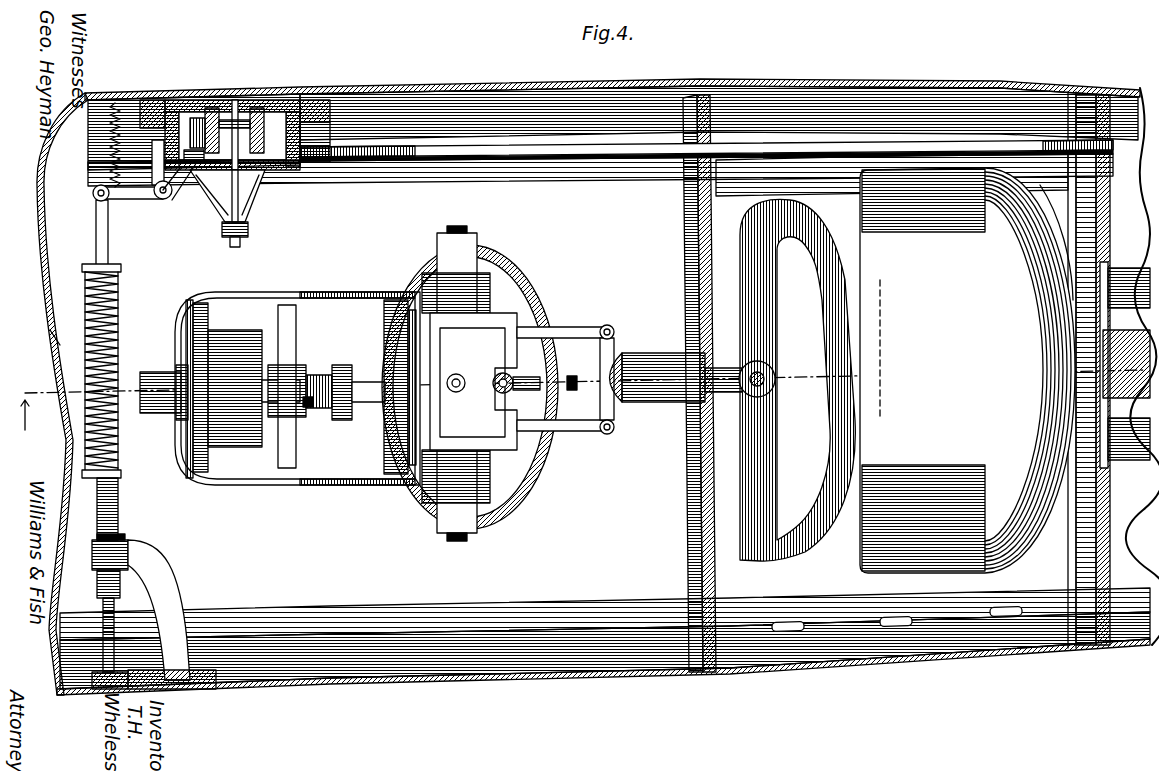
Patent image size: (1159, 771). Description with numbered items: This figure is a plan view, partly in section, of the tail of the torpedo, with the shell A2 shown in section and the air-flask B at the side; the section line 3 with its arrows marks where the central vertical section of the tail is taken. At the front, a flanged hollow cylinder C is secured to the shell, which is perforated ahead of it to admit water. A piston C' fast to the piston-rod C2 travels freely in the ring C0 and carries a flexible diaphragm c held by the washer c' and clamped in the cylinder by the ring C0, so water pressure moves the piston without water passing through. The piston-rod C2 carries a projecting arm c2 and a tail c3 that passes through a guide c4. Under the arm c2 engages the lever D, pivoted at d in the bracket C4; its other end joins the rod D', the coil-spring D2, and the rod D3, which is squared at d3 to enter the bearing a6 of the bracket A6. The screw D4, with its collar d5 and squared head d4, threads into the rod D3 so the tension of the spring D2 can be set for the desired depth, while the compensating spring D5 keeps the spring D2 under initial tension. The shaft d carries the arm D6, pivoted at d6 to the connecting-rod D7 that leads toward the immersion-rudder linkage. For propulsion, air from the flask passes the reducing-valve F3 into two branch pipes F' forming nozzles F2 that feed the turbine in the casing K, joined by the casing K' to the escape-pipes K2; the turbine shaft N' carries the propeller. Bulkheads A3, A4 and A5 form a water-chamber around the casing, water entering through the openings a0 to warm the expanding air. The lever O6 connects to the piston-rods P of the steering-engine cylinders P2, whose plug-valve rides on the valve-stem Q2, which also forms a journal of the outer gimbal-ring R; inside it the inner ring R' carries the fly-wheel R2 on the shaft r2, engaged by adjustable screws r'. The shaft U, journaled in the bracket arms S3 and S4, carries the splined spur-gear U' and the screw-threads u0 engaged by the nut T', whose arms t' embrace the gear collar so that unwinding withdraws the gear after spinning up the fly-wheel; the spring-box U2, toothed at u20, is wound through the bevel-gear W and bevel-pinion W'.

The hull shell A2 is at (505, 90).
The bulkhead A3 is at (683, 555).
The bulkhead A4 is at (1055, 228).
The bulkhead A5 is at (820, 160).
The bracket A6 is at (180, 590).
The air-flask B is at (43, 339).
The section line 3 is at (545, 396).
The flanged hollow cylinder C is at (220, 117).
The piston C' is at (242, 115).
The ring C0 is at (312, 162).
The piston-rod C2 is at (262, 178).
The bracket C4 is at (152, 178).
The flexible diaphragm c is at (257, 111).
The washer c' is at (273, 109).
The projecting arm c2 is at (240, 195).
The tail c3 is at (241, 243).
The guide c4 is at (225, 236).
The lever D is at (179, 209).
The rod D' is at (86, 226).
The coil-spring D2 is at (120, 300).
The rod D3 is at (118, 505).
The screw D4 is at (103, 625).
The compensating spring D5 is at (113, 103).
The arm D6 is at (195, 118).
The connecting-rod D7 is at (390, 150).
The pivot shaft d is at (160, 200).
The squared portion d3 is at (125, 537).
The squared head d4 is at (130, 688).
The collar d5 is at (170, 660).
The pivot d6 is at (192, 165).
The branch pipes F' is at (580, 372).
The nozzles F2 is at (832, 465).
The reducing-valve F3 is at (772, 365).
The casing K is at (967, 370).
The casing K' is at (1079, 364).
The escape-pipes K2 is at (1108, 440).
The shaft N' is at (1058, 365).
The lever O6 is at (614, 335).
The piston-rods P is at (555, 327).
The cylinders P2 is at (512, 318).
The valve-stem Q2 is at (461, 370).
The outer gimbal-ring R is at (436, 389).
The inner ring R' is at (470, 388).
The fly-wheel R2 is at (490, 280).
The adjustable screw r' is at (547, 368).
The fly-wheel shaft r2 is at (512, 383).
The bracket arm S3 is at (293, 345).
The bracket arm S4 is at (160, 375).
The nut T' is at (329, 400).
The arms of nut t' is at (366, 375).
The shaft U is at (341, 379).
The spur-gear U' is at (374, 367).
The spring-box U2 is at (230, 350).
The screw-threads u0 is at (309, 406).
The teeth u20 is at (200, 312).
The bevel-gear W is at (283, 377).
The bevel-pinion W' is at (153, 410).
The openings a0 is at (1000, 618).
The bearing a6 is at (92, 550).